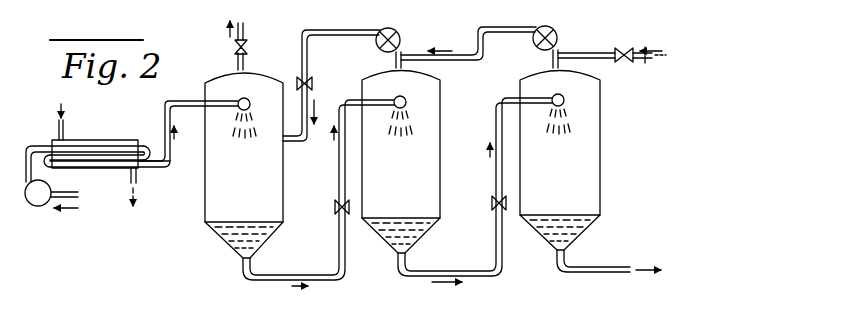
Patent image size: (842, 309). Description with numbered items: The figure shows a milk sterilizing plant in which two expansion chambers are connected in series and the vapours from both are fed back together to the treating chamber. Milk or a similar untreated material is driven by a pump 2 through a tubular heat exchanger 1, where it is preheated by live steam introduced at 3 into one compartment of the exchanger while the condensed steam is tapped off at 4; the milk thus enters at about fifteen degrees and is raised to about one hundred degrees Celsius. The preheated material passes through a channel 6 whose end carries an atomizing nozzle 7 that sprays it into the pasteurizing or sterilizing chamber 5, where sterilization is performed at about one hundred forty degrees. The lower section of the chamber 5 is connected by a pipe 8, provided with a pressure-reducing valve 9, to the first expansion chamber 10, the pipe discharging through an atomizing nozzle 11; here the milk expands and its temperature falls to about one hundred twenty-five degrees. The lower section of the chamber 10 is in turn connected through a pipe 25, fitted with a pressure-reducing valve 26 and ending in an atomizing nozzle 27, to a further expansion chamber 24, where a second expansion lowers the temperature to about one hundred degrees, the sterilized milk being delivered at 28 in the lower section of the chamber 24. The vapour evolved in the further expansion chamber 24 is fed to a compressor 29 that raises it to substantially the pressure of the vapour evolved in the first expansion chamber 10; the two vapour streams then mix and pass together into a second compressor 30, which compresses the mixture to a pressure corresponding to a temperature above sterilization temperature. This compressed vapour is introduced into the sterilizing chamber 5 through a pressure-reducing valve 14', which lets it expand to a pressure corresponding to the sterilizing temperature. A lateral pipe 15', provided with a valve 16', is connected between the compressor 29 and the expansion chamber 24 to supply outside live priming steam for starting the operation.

The tubular heat exchanger 1 is at (80, 157).
The pump 2 is at (38, 203).
The live steam inlet 3 is at (65, 131).
The condensate outlet 4 is at (138, 180).
The pasteurizing or sterilizing chamber 5 is at (258, 188).
The channel 6 is at (190, 102).
The atomizing nozzle 7 is at (250, 98).
The pipe 8 is at (330, 277).
The pressure-reducing valve 9 is at (335, 207).
The first expansion chamber 10 is at (425, 143).
The atomizing nozzle 11 is at (408, 101).
The pressure-reducing valve 14' is at (331, 85).
The lateral pipe 15' is at (649, 65).
The valve 16' is at (595, 45).
The further expansion chamber 24 is at (580, 160).
The pipe 25 is at (437, 274).
The pressure-reducing valve 26 is at (492, 204).
The atomizing nozzle 27 is at (566, 99).
The sterilized milk outlet 28 is at (586, 269).
The compressor 29 is at (558, 35).
The second compressor 30 is at (400, 37).